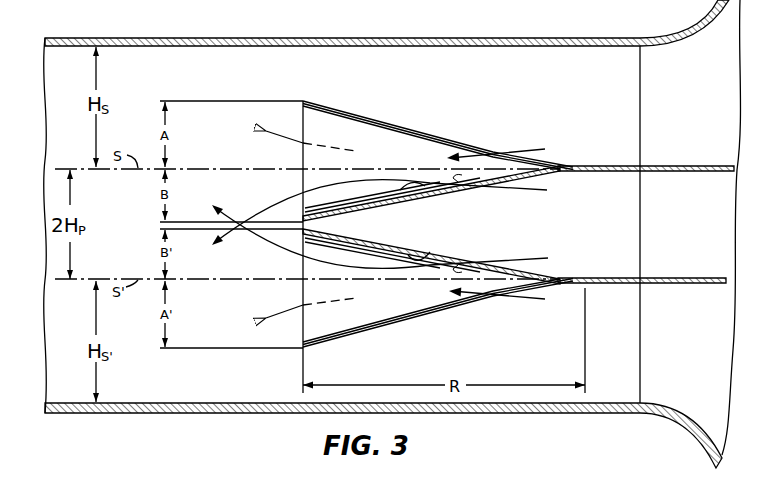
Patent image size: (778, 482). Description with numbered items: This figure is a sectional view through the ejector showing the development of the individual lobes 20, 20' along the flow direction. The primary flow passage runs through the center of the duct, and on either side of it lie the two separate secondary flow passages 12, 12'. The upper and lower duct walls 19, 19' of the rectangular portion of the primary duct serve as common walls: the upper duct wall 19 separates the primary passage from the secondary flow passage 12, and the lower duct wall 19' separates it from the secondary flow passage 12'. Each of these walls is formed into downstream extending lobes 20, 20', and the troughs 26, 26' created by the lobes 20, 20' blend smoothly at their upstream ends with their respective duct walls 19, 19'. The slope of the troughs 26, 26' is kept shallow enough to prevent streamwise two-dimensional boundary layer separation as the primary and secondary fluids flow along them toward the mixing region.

The secondary flow passage 12 is at (387, 46).
The secondary flow passage 12' is at (383, 414).
The upper duct wall 19 is at (646, 183).
The lower duct wall 19' is at (642, 267).
The lobe 20 is at (438, 161).
The lobe 20' is at (438, 287).
The trough 26 is at (431, 201).
The trough 26' is at (441, 251).